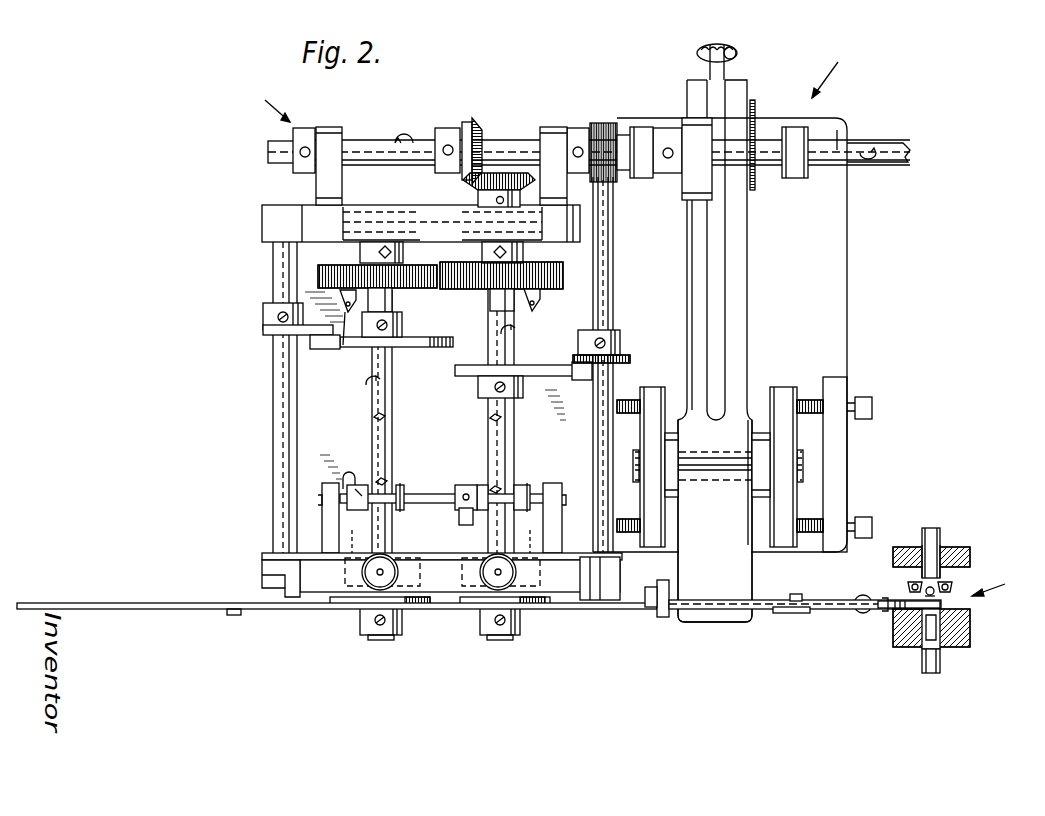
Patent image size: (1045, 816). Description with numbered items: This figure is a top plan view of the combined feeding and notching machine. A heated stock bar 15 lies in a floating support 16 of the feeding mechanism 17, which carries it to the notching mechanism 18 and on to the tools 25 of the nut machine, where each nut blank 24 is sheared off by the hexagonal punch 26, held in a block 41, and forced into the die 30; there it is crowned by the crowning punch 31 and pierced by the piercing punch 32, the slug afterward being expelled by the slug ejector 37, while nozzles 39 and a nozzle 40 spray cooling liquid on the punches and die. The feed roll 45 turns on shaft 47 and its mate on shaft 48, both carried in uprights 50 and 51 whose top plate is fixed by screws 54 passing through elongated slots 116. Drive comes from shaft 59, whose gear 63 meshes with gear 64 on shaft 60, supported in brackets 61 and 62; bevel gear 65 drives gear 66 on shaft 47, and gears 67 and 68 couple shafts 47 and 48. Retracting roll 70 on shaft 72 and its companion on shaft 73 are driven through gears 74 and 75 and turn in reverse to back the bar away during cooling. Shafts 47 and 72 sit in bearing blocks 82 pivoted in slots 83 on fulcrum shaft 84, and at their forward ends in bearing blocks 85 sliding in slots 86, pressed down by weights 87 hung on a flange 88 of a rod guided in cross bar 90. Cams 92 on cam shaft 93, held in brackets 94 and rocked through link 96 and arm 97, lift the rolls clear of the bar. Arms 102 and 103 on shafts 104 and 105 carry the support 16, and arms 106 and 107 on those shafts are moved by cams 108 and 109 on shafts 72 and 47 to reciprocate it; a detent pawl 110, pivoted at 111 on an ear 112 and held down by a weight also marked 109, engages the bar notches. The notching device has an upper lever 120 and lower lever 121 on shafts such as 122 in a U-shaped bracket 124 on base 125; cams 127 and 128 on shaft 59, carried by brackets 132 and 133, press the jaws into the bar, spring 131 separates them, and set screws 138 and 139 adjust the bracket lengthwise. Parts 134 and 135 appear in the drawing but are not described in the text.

The stock bar 15 is at (148, 603).
The support 16 is at (236, 615).
The feeding mechanism 17 is at (262, 101).
The bar notching mechanism 18 is at (832, 66).
The nut blank 24 is at (925, 603).
The tools 25 is at (956, 599).
The cut-off punch 26 is at (936, 548).
The die 30 is at (970, 638).
The crowning punch 31 is at (938, 630).
The piercing punch 32 is at (922, 664).
The slug ejector 37 is at (923, 538).
The nozzles 39 is at (910, 583).
The nozzle 40 is at (938, 594).
The block 41 is at (962, 553).
The feed roll 45 is at (525, 607).
The shaft 47 is at (487, 418).
The shaft 48 is at (506, 435).
The upright 50 is at (322, 553).
The rear upright 51 is at (419, 217).
The screws 54 is at (344, 292).
The shaft 59 is at (898, 146).
The shaft 60 is at (371, 140).
The bracket 61 is at (330, 128).
The bracket 62 is at (551, 128).
The gear 63 is at (622, 135).
The gear 64 is at (600, 122).
The bevel gear 65 is at (472, 120).
The gear 66 is at (490, 176).
The gear 67 is at (548, 296).
The gear 68 is at (540, 268).
The retracting roll 70 is at (405, 607).
The shaft 72 is at (372, 410).
The shaft 73 is at (390, 432).
The gear 74 is at (340, 265).
The gear 75 is at (403, 289).
The bearing blocks 82 is at (368, 208).
The slots 83 is at (420, 208).
The shaft 84 is at (391, 208).
The bearing blocks 85 is at (438, 533).
The slots 86 is at (430, 598).
The weights 87 is at (385, 573).
The flange 88 is at (346, 569).
The cross bar 90 is at (330, 590).
The cams 92 is at (396, 487).
The cam shaft 93 is at (433, 493).
The brackets 94 is at (328, 483).
The link 96 is at (468, 527).
The arm 97 is at (459, 516).
The upstanding arm 102 is at (290, 600).
The upstanding arm 103 is at (604, 590).
The shaft 104 is at (272, 460).
The shaft 105 is at (611, 298).
The upstanding arm 106 is at (285, 335).
The upstanding arm 107 is at (612, 362).
The cam 108 is at (400, 346).
The cam 109 is at (540, 360).
The detent pawl 110 is at (825, 610).
The pivot 111 is at (790, 596).
The ear 112 is at (788, 614).
The elongated slots 116 is at (342, 347).
The upper lever 120 is at (712, 326).
The lower lever 121 is at (688, 303).
The shaft 122 is at (803, 462).
The U-shaped bracket 124 is at (762, 388).
The base 125 is at (848, 300).
The cam 127 is at (755, 108).
The cam 128 is at (690, 185).
The spring 131 is at (698, 52).
The bracket 132 is at (640, 128).
The bracket 133 is at (802, 130).
The bracket 134 is at (665, 612).
The stop 135 is at (650, 585).
The set screw 138 is at (616, 406).
The set screw 139 is at (808, 400).